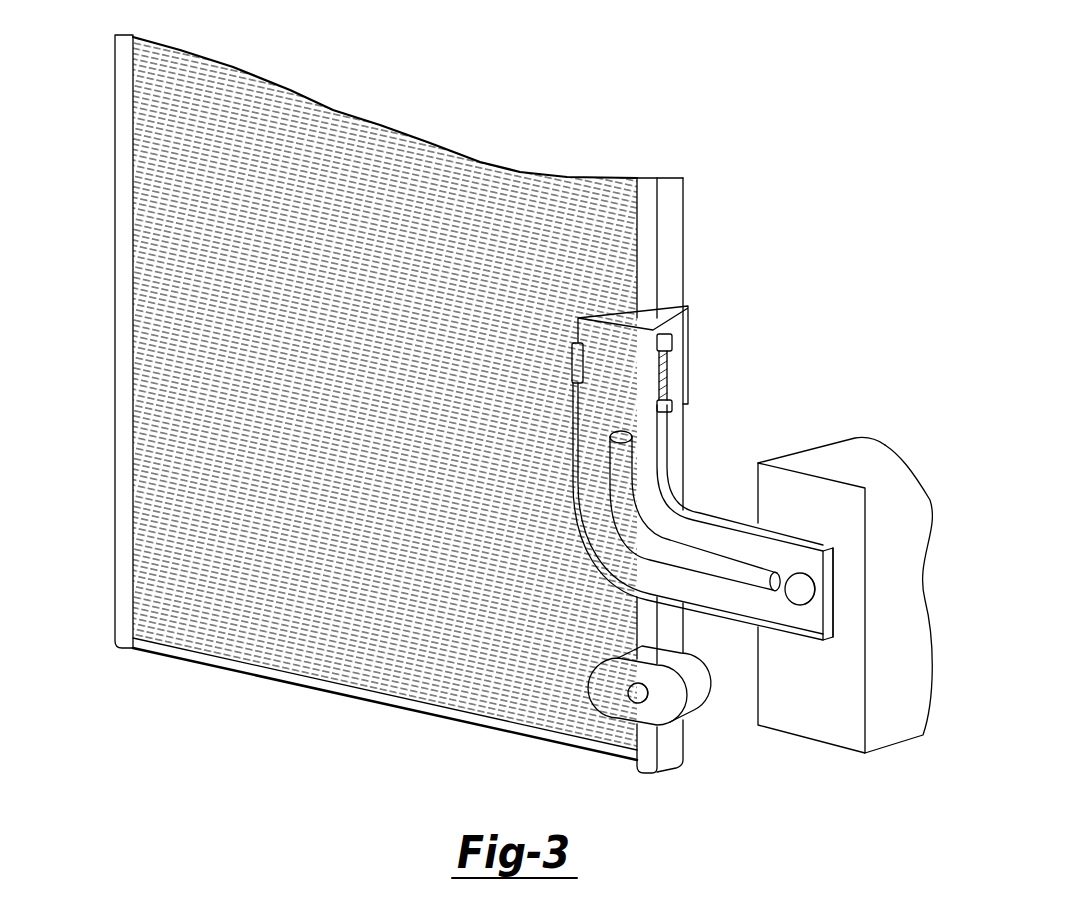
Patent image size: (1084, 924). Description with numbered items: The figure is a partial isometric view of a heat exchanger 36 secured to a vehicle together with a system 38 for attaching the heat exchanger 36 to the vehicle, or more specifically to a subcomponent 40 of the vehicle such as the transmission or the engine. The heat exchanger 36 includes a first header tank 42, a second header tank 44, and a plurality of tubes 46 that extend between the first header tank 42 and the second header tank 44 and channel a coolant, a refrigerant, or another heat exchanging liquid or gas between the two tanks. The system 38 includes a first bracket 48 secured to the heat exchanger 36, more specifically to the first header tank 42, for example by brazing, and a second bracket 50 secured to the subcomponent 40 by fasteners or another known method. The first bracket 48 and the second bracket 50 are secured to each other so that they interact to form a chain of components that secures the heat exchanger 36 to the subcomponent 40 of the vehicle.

The heat exchanger 36 is at (375, 381).
The system for attaching the heat exchanger 38 is at (716, 516).
The subcomponent of the vehicle 40 is at (865, 463).
The first header tank 42 is at (670, 210).
The second header tank 44 is at (127, 65).
The plurality of tubes 46 is at (333, 167).
The first bracket 48 is at (678, 338).
The second bracket 50 is at (802, 613).